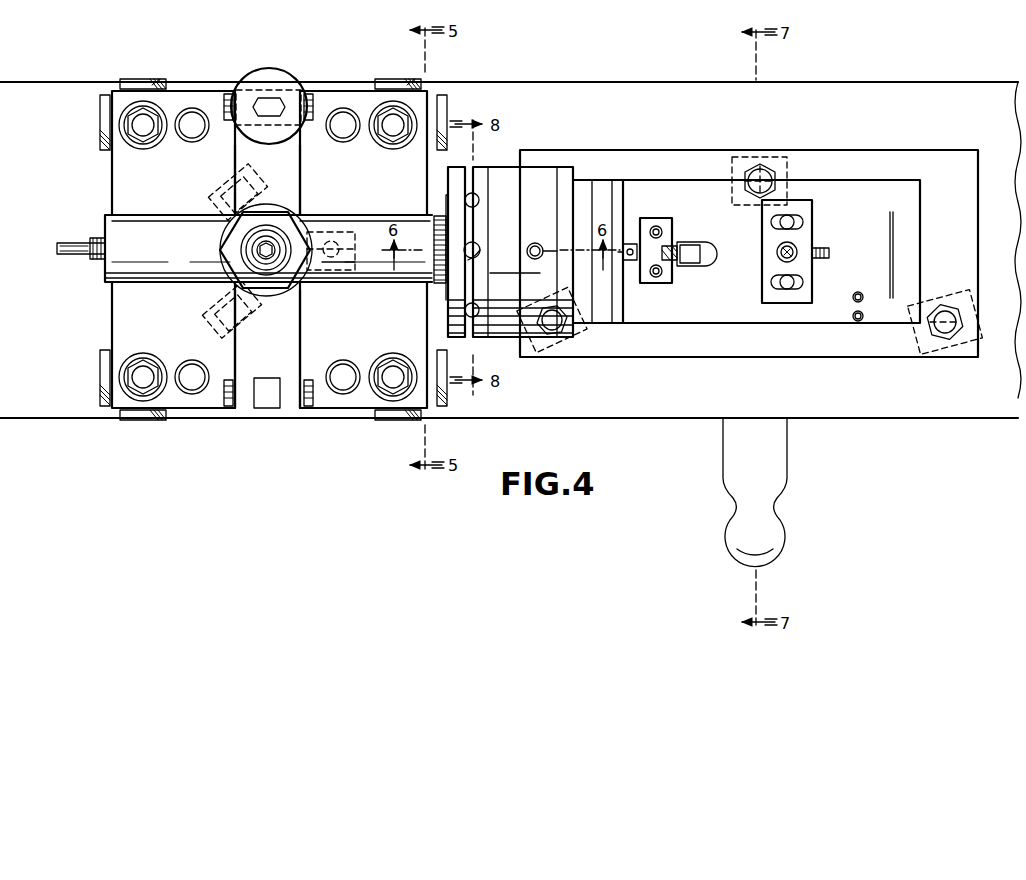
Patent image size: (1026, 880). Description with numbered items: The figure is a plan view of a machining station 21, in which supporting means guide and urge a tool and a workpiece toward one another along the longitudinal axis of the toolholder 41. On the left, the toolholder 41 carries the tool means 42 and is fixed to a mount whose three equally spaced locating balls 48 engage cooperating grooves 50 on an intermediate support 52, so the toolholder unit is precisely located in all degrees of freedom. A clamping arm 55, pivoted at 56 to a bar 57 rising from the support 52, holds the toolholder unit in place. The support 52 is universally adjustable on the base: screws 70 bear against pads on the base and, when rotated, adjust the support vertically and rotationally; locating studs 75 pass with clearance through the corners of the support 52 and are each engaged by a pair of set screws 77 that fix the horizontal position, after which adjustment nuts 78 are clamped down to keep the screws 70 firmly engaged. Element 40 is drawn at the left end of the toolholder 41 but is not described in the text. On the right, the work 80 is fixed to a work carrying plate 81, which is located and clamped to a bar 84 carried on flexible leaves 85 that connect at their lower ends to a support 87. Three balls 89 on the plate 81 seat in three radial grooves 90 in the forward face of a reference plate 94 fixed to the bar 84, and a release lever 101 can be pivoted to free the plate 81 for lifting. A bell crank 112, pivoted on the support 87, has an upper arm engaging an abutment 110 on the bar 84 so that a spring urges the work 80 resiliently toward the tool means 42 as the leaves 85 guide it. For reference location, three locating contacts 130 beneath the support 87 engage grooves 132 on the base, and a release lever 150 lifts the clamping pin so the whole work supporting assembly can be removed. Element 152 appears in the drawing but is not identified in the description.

The station 21 is at (578, 56).
The rod 40 is at (70, 245).
The toolholder 41 is at (185, 258).
The tool means 42 is at (435, 290).
The locating balls 48 is at (250, 178).
The grooves 50 is at (212, 195).
The intermediate support 52 is at (156, 193).
The clamping arm 55 is at (300, 187).
The pivot 56 is at (300, 385).
The bar 57 is at (268, 400).
The screws 70 is at (192, 117).
The locating studs 75 is at (140, 128).
The set screws 77 is at (164, 84).
The adjustment nuts 78 is at (150, 141).
The work 80 is at (448, 210).
The work carrying plate 81 is at (458, 195).
The bar 84 is at (706, 303).
The flexible leaves 85 is at (626, 218).
The support 87 is at (920, 150).
The balls 89 is at (472, 198).
The grooves 90 is at (476, 254).
The reference plate 94 is at (488, 204).
The release lever 101 is at (537, 243).
The abutment 110 is at (686, 246).
The bell crank 112 is at (700, 248).
The locating contacts 130 is at (762, 176).
The grooves 132 is at (741, 156).
The release lever 150 is at (770, 519).
The terminal plate 152 is at (790, 256).